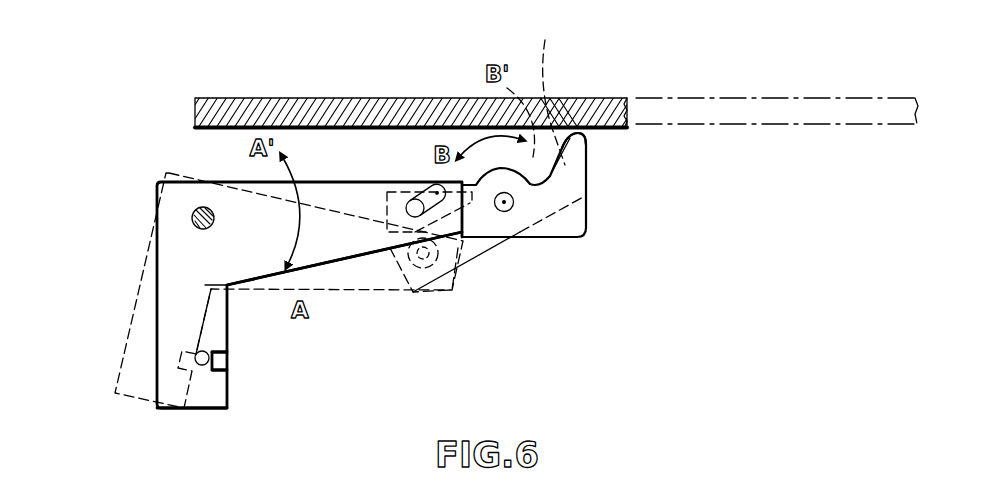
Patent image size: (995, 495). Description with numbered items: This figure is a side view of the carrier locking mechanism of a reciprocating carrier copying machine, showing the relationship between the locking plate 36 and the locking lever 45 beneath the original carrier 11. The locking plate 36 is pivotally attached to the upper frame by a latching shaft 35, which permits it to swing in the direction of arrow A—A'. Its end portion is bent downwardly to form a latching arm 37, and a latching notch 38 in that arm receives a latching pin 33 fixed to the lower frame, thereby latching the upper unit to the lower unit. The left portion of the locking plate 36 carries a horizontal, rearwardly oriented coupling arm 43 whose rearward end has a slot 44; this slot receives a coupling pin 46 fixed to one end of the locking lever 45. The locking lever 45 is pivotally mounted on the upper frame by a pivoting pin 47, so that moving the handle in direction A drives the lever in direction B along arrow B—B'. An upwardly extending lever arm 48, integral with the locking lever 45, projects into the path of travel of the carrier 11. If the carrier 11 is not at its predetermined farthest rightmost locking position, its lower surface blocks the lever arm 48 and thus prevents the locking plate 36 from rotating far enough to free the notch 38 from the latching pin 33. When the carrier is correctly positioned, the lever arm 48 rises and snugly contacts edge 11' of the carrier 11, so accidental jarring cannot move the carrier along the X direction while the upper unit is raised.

The original carrier 11 is at (549, 80).
The edge of carrier 11' is at (550, 88).
The latching pin 33 is at (205, 366).
The latching shaft 35 is at (203, 207).
The locking plate 36 is at (150, 238).
The latching arm 37 is at (200, 403).
The latching notch 38 is at (222, 358).
The coupling arm 43 is at (343, 232).
The slot 44 is at (445, 203).
The locking lever 45 is at (572, 210).
The coupling pin 46 is at (412, 200).
The pivoting pin 47 is at (504, 212).
The lever arm 48 is at (582, 133).